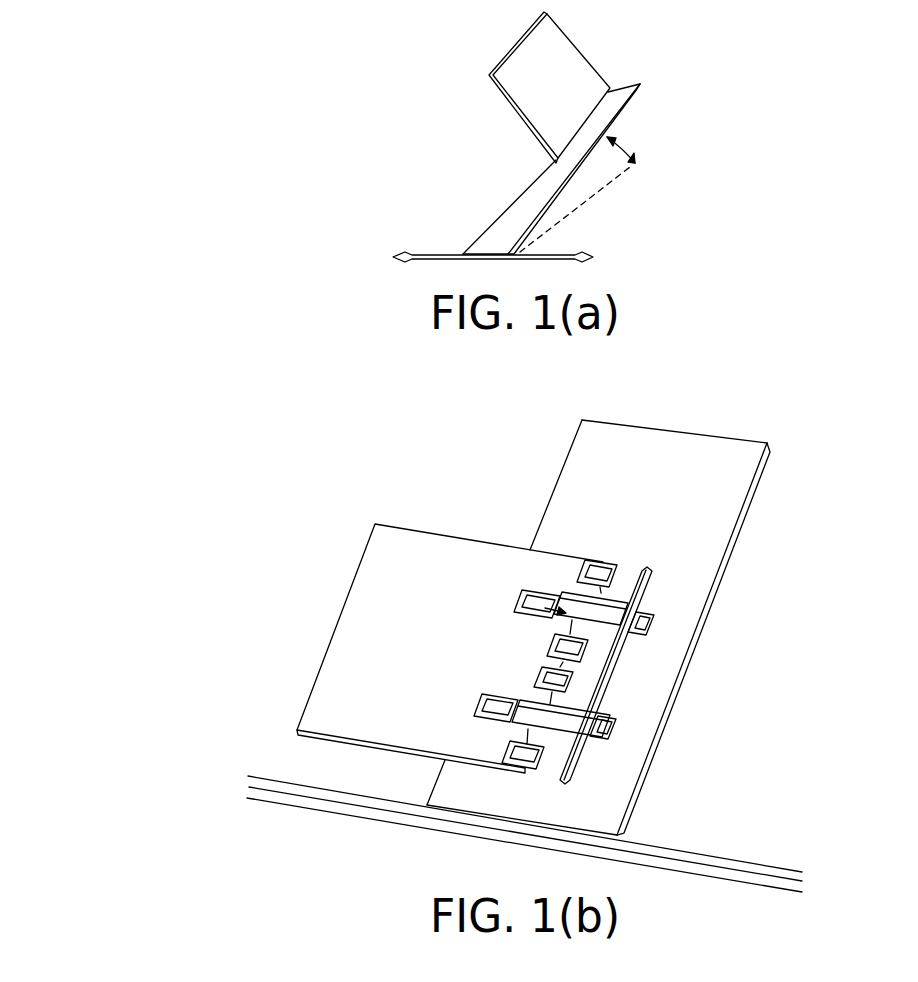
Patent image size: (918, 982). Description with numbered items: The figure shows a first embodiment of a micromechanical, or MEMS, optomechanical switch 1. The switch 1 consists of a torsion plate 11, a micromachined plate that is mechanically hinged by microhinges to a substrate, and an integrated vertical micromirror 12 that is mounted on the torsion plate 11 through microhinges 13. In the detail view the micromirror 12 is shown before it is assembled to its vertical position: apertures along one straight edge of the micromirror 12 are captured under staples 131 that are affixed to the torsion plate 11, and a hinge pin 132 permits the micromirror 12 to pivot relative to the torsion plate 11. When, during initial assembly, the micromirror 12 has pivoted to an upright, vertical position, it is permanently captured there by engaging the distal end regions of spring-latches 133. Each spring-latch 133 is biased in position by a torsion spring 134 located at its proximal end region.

In FIG. 1A, the optomechanical switch 1 is at (666, 106).
In FIG. 1A, the torsion plate 11 is at (513, 200).
In FIG. 1B, the torsion plate 11 is at (713, 512).
In FIG. 1A, the vertical micromirror 12 is at (510, 62).
In FIG. 1B, the vertical micromirror 12 is at (385, 542).
In FIG. 1B, the microhinges 13 is at (532, 626).
In FIG. 1B, the staples 131 is at (597, 567).
In FIG. 1B, the hinge pin 132 is at (582, 575).
In FIG. 1B, the spring-latches 133 is at (522, 593).
In FIG. 1B, the torsion spring 134 is at (632, 575).